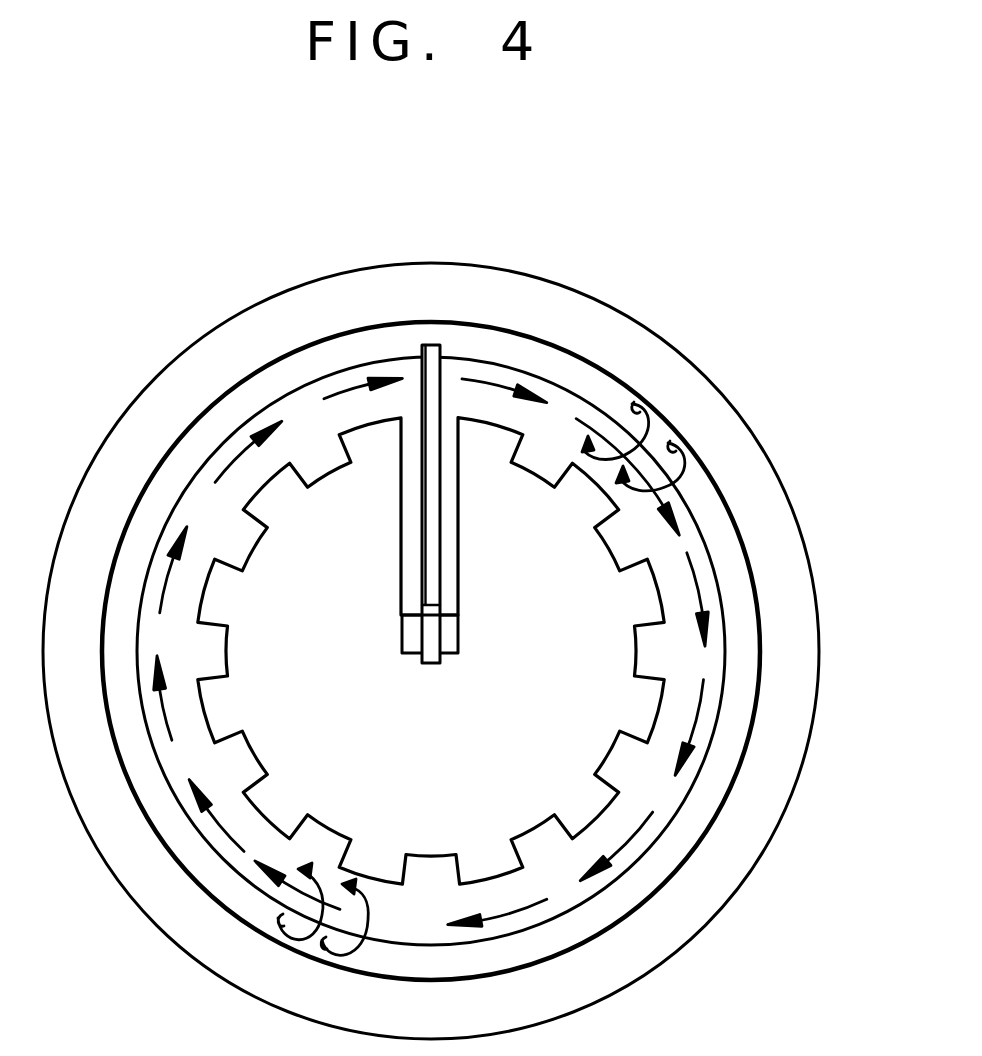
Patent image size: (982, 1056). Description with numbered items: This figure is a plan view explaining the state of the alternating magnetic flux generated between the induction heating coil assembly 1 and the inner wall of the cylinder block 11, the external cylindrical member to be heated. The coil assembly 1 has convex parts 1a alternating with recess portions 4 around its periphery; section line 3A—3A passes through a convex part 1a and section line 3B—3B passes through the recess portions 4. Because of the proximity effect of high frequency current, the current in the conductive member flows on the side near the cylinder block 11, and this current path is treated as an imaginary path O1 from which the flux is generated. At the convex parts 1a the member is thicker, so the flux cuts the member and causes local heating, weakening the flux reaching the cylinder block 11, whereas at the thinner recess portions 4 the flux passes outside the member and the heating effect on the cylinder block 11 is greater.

The coil assembly 1 is at (480, 360).
The convex part 1a is at (232, 650).
The section line 3A— 3A is at (147, 475).
The section line 3B— 3B is at (195, 412).
The recess portions 4 is at (600, 488).
The cylinder block 11 is at (615, 325).
The imaginary current path O1 is at (683, 592).